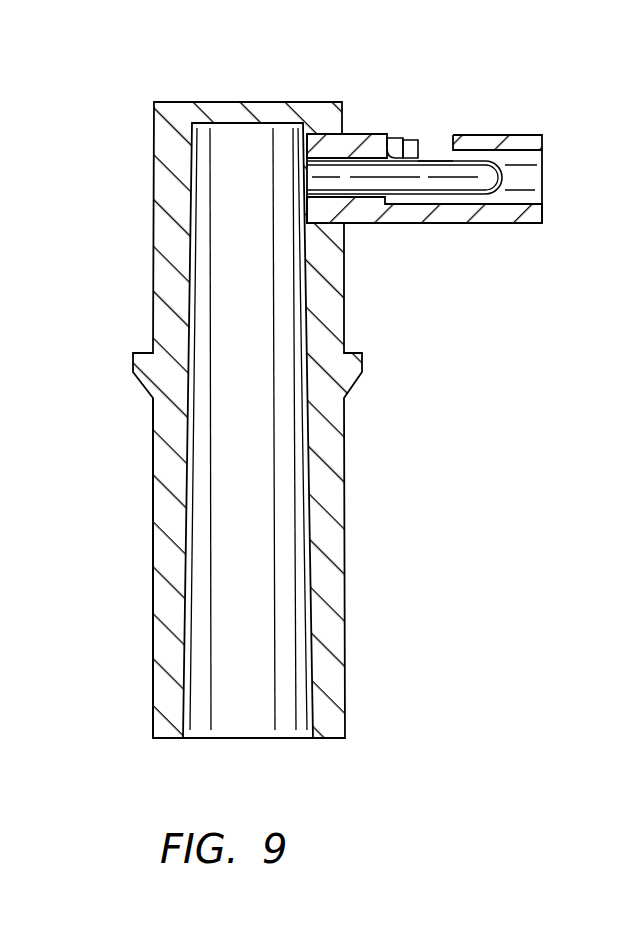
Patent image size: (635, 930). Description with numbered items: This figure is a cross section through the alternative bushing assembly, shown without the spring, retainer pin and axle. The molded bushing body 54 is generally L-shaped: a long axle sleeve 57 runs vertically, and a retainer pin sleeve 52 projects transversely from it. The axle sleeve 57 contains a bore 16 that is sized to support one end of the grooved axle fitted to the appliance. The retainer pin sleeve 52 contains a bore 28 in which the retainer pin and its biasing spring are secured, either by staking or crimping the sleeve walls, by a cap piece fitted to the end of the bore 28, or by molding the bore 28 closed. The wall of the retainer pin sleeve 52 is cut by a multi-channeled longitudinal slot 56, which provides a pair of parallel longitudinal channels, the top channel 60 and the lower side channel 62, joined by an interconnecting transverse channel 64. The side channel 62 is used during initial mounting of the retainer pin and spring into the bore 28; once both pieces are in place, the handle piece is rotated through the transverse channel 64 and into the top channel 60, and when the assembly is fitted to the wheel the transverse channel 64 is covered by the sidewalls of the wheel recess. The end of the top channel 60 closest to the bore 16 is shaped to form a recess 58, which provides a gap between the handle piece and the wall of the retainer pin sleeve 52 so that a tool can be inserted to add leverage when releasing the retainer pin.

The bushing body 54 is at (152, 240).
The axle sleeve 57 is at (153, 523).
The bore 16 is at (287, 728).
The retainer pin sleeve 52 is at (522, 224).
The recess 58 is at (396, 150).
The top channel 60 is at (405, 150).
The transverse channel 64 is at (433, 152).
The multi-channeled longitudinal slot 56 is at (500, 137).
The side channel 62 is at (457, 182).
The bore 28 is at (530, 170).